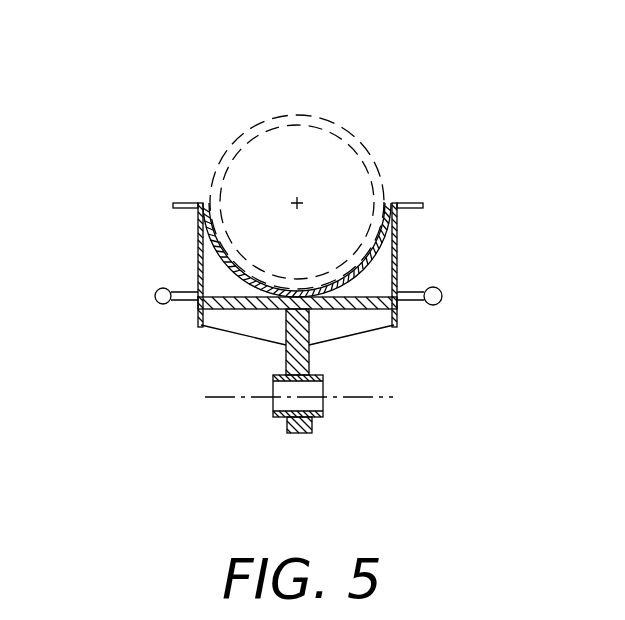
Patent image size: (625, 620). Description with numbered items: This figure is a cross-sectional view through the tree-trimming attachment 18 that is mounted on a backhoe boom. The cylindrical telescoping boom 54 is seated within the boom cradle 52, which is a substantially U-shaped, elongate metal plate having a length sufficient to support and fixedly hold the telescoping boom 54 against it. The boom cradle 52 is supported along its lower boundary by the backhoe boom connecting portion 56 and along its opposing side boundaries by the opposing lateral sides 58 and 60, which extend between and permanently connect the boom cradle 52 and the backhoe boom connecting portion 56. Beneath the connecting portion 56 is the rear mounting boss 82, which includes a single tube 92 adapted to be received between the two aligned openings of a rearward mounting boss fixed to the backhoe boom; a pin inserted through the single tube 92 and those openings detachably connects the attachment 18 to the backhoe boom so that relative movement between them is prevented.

The tree-trimming attachment 18 is at (472, 140).
The telescoping boom 54 is at (233, 141).
The lateral side 58 is at (198, 252).
The boom cradle 52 is at (397, 252).
The lateral side 60 is at (397, 238).
The backhoe boom connecting portion 56 is at (390, 322).
The rear mounting boss 82 is at (378, 419).
The single tube 92 is at (273, 415).